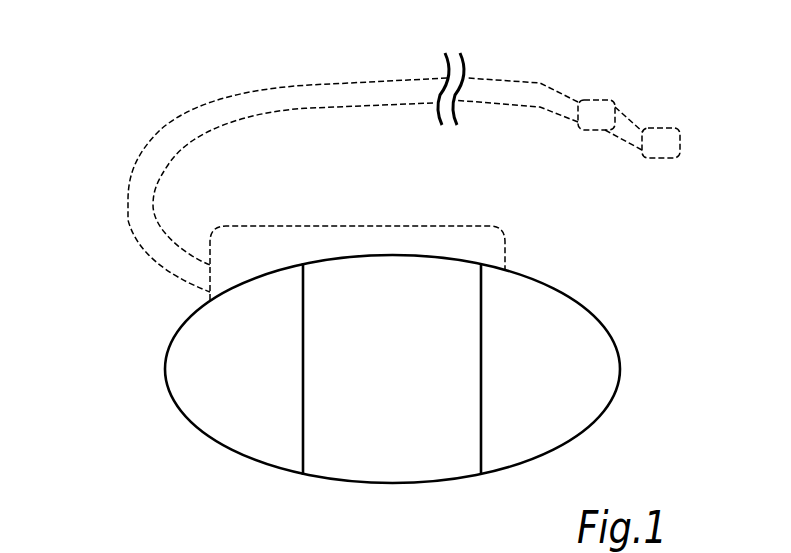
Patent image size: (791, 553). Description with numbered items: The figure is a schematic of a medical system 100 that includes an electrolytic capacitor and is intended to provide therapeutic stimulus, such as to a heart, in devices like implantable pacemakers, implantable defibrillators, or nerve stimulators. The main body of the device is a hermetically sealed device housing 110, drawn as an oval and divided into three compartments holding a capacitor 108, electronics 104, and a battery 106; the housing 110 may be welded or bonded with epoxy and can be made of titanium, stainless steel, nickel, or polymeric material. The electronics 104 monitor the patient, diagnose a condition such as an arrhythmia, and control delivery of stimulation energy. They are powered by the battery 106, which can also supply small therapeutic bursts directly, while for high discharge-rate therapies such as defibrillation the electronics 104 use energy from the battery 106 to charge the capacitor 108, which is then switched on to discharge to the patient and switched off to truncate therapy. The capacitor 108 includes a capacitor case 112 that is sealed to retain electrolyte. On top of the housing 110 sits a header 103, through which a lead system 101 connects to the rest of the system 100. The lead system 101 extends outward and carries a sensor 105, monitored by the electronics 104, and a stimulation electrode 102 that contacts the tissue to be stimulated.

The medical system 100 is at (136, 33).
The lead system 101 is at (318, 60).
The stimulation electrode 102 is at (672, 128).
The header 103 is at (356, 226).
The electronics 104 is at (394, 483).
The sensor 105 is at (607, 100).
The battery 106 is at (575, 437).
The capacitor 108 is at (212, 434).
The hermetically sealed device housing 110 is at (581, 303).
The capacitor case 112 is at (289, 320).